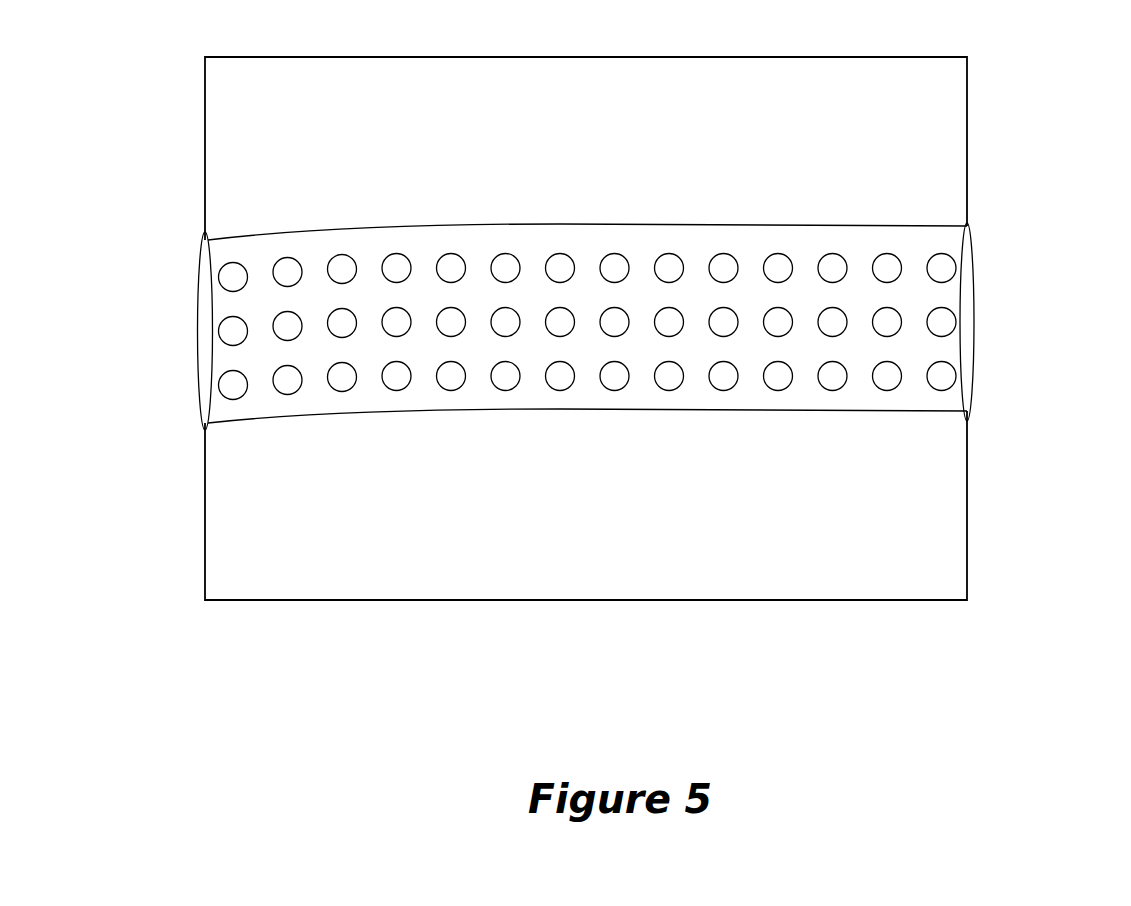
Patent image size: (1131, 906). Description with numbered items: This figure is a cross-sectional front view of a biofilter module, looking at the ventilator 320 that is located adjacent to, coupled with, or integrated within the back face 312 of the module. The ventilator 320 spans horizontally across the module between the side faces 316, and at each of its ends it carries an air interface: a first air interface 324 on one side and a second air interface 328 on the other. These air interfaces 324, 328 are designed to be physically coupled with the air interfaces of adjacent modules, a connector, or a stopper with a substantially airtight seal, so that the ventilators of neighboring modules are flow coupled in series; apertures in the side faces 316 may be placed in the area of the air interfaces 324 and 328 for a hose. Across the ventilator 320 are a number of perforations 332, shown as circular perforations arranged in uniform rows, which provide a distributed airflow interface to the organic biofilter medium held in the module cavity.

The back face 312 is at (270, 97).
The side faces 316 is at (205, 490).
The ventilator 320 is at (524, 224).
The first air interface 324 is at (197, 313).
The second air interface 328 is at (974, 278).
The perforations 332 is at (494, 391).